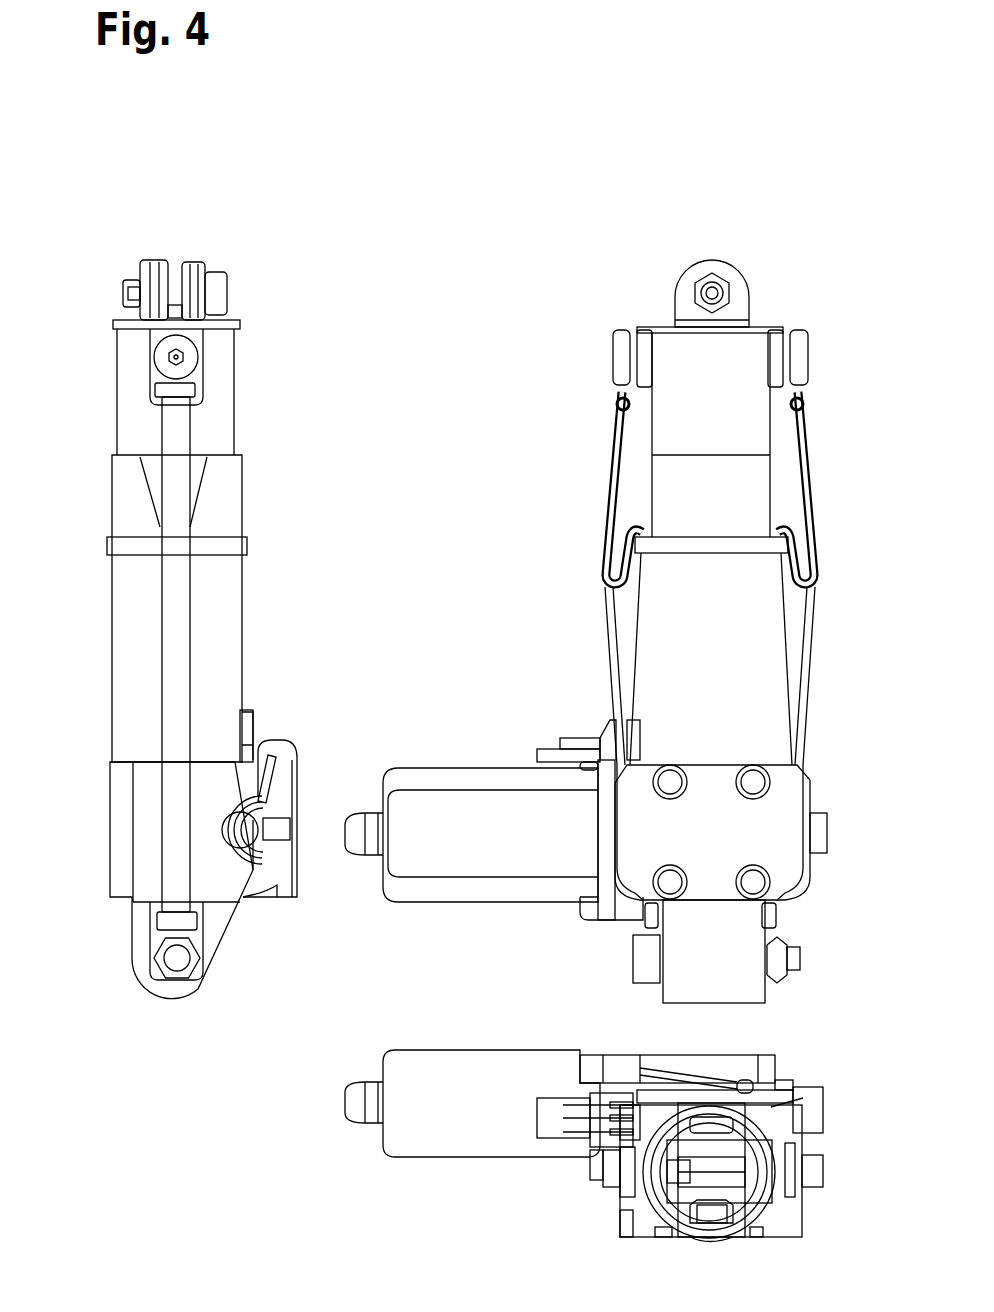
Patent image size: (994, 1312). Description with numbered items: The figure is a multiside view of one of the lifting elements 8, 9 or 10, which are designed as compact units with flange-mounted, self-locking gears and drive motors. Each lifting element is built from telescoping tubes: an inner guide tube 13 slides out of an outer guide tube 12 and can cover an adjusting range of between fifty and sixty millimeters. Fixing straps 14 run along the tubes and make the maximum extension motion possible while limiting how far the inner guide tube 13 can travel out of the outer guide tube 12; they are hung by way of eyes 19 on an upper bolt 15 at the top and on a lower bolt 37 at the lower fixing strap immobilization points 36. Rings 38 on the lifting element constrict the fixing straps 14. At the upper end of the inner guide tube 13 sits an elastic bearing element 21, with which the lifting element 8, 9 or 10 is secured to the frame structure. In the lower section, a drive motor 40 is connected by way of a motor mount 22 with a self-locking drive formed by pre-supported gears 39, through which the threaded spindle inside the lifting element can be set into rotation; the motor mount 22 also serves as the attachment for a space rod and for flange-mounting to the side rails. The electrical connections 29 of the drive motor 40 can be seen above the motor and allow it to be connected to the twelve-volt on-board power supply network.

The lifting element 8 is at (445, 592).
The lifting element 9 is at (445, 592).
The lifting element 10 is at (445, 592).
The outer guide tube 12 is at (130, 653).
The inner guide tube 13 is at (130, 413).
The fixing strap 14 is at (232, 606).
The upper bolt 15 is at (180, 358).
The eye 19 is at (195, 378).
The elastic bearing element 21 is at (192, 268).
The motor mount 22 is at (612, 907).
The electrical connections 29 is at (600, 722).
The lower fixing strap immobilization point 36 is at (828, 948).
The bolt 37 is at (177, 960).
The ring 38 is at (714, 545).
The pre-supported gears 39 is at (775, 812).
The drive motor 40 is at (420, 778).